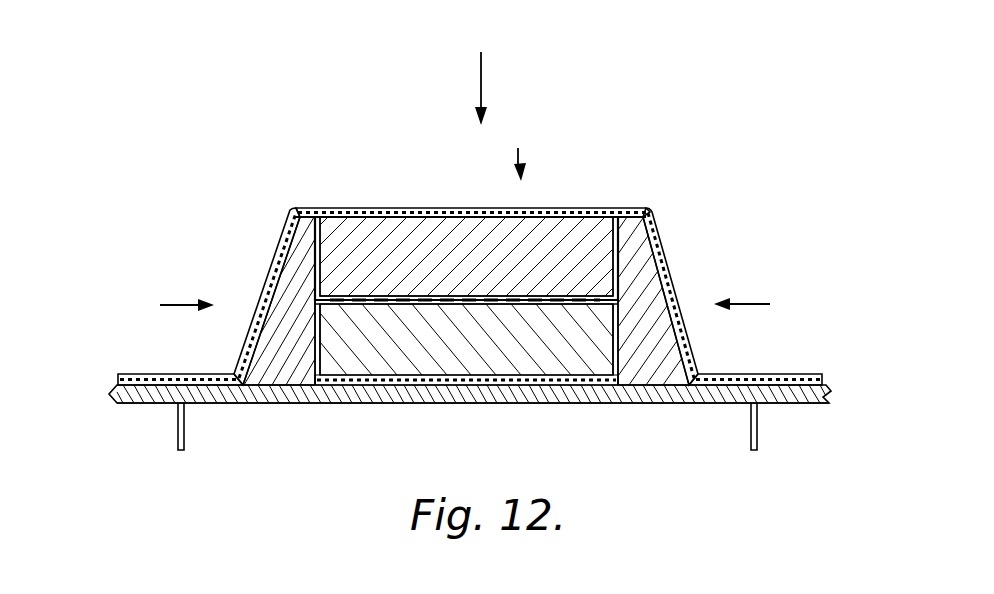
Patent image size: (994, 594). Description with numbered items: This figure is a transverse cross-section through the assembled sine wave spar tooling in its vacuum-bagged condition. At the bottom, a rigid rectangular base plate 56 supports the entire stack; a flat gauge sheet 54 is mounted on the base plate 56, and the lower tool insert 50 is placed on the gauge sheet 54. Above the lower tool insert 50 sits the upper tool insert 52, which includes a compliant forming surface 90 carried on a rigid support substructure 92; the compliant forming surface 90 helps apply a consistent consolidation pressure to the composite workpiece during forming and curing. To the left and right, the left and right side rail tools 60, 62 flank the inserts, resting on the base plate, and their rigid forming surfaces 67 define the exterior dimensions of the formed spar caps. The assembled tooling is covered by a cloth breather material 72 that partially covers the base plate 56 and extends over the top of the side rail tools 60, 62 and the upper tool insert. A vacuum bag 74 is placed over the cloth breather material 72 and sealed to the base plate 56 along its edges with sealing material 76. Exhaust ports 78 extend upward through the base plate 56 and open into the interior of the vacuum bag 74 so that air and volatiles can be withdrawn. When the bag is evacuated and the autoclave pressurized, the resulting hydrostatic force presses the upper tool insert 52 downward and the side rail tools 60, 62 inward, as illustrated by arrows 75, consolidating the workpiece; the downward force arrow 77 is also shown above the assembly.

The lower tool insert 50 is at (408, 352).
The upper tool insert 52 is at (585, 240).
The gauge sheet 54 is at (497, 378).
The base plate 56 is at (132, 403).
The left side rail tool 60 is at (275, 360).
The right side rail tool 62 is at (648, 324).
The rigid forming surfaces 67 is at (317, 372).
The cloth breather material 72 is at (660, 245).
The vacuum bag 74 is at (545, 209).
The arrows 75 is at (518, 150).
The sealing material 76 is at (118, 377).
The applied force arrow 77 is at (478, 80).
The exhaust ports 78 is at (180, 428).
The compliant forming surface 90 is at (322, 240).
The rigid support substructure 92 is at (433, 243).